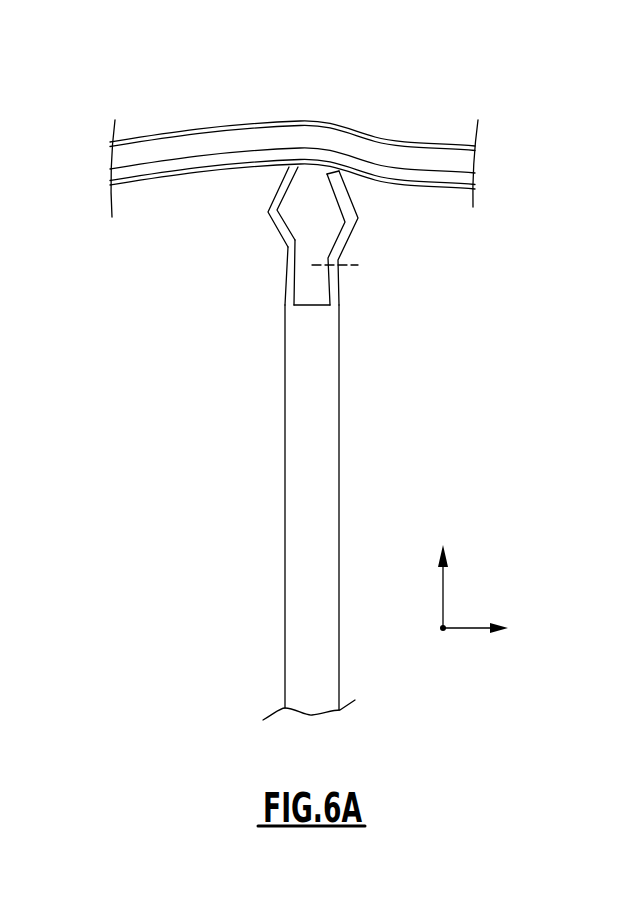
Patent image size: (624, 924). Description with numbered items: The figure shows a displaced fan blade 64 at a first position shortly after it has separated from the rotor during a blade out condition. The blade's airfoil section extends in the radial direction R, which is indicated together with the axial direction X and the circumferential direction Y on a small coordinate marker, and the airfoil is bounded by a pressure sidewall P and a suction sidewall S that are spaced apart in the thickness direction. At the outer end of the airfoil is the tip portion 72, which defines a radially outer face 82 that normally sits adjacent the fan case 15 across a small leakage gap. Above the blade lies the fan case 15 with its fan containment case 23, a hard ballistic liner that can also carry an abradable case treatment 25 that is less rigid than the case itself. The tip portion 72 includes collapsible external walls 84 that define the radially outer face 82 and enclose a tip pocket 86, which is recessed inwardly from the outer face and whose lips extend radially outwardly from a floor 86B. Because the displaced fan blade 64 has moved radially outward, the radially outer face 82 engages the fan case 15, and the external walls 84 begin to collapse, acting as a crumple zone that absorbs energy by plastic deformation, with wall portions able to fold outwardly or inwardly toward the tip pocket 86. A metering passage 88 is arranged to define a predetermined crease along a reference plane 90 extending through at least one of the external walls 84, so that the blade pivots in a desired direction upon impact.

The fan case 15 is at (147, 78).
The fan containment case 23 is at (294, 155).
The abradable case treatment 25 is at (186, 170).
The fan blade 64 is at (168, 285).
The radially outer face 82 is at (290, 168).
The collapsible external walls 84 is at (276, 229).
The tip pocket 86 is at (308, 232).
The floor 86B is at (312, 306).
The metering passage 88 is at (338, 243).
The reference plane 90 is at (353, 265).
The tip portion 72 is at (286, 286).
The pressure sidewall P is at (340, 457).
The suction sidewall S is at (285, 482).
The radial direction R is at (444, 595).
The axial direction X is at (442, 631).
The circumferential direction Y is at (475, 630).